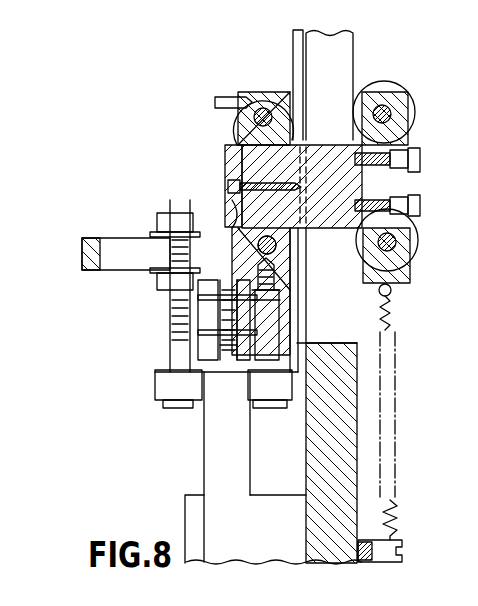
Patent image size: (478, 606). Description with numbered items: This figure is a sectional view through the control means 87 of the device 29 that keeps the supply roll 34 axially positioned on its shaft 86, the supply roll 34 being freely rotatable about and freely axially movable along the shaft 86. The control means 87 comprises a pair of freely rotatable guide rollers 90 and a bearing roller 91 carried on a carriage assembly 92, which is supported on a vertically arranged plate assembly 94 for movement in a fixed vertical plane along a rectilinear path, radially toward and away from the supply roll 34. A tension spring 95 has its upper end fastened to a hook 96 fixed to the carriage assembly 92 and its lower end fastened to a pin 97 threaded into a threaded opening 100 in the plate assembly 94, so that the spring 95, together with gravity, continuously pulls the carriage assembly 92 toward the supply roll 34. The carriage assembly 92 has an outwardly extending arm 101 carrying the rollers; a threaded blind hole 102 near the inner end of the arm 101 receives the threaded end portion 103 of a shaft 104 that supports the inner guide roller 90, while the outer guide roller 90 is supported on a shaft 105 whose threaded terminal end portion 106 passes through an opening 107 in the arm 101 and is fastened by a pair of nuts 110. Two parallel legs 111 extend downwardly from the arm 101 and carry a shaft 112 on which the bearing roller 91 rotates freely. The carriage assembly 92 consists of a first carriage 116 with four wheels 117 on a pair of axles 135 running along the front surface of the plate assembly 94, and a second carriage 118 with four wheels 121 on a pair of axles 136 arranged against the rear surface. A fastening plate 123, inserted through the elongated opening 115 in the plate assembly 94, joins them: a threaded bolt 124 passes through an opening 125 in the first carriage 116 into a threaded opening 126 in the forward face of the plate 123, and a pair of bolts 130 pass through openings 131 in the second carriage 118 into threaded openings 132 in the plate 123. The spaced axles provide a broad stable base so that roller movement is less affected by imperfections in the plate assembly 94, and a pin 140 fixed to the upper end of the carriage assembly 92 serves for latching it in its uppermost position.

The device 29 is at (405, 83).
The supply roll 34 is at (204, 452).
The shaft 86 is at (185, 512).
The control means 87 is at (148, 409).
The guide roller 90 is at (155, 383).
The bearing roller 91 is at (220, 345).
The carriage assembly 92 is at (272, 84).
The plate assembly 94 is at (350, 47).
The tension spring 95 is at (395, 514).
The hook 96 is at (392, 293).
The pin 97 is at (385, 563).
The threaded opening 100 is at (347, 560).
The arm 101 is at (82, 251).
The threaded blind hole 102 is at (296, 264).
The threaded end portion 103 is at (276, 284).
The shaft 104 is at (276, 300).
The shaft 105 is at (198, 331).
The threaded terminal end portion 106 is at (198, 300).
The opening 107 is at (120, 240).
The nut 110 is at (162, 218).
The leg 111 is at (200, 316).
The shaft 112 is at (280, 325).
The elongated opening 115 is at (293, 37).
The first carriage 116 is at (225, 160).
The wheel 117 is at (238, 122).
The second carriage 118 is at (393, 140).
The wheel 121 is at (415, 110).
The fastening plate 123 is at (312, 140).
The threaded bolt 124 is at (228, 186).
The opening 125 is at (242, 200).
The threaded opening 126 is at (270, 127).
The bolt 130 is at (421, 158).
The opening 131 is at (412, 170).
The threaded opening 132 is at (360, 145).
The axle 135 is at (255, 126).
The axle 136 is at (392, 106).
The pin 140 is at (225, 97).